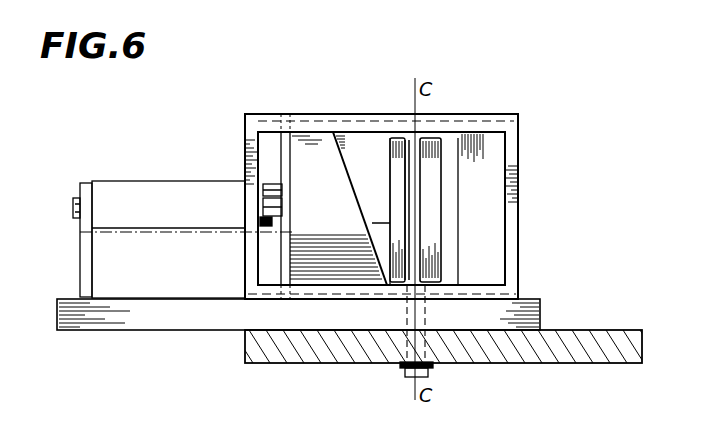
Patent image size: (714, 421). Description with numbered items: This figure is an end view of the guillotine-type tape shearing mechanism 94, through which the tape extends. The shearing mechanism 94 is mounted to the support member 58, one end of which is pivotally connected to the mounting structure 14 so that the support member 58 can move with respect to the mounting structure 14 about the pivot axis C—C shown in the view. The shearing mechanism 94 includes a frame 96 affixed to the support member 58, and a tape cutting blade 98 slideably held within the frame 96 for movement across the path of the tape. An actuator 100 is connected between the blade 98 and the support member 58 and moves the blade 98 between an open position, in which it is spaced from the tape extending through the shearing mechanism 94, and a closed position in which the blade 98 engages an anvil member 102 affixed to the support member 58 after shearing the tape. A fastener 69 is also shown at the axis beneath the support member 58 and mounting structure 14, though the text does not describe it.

The mounting structure 14 is at (597, 347).
The support member 58 is at (528, 308).
The fastening nut 69 is at (430, 374).
The tape shearing mechanism 94 is at (523, 190).
The frame 96 is at (398, 123).
The tape cutting blade 98 is at (318, 133).
The actuator 100 is at (152, 190).
The anvil member 102 is at (490, 147).